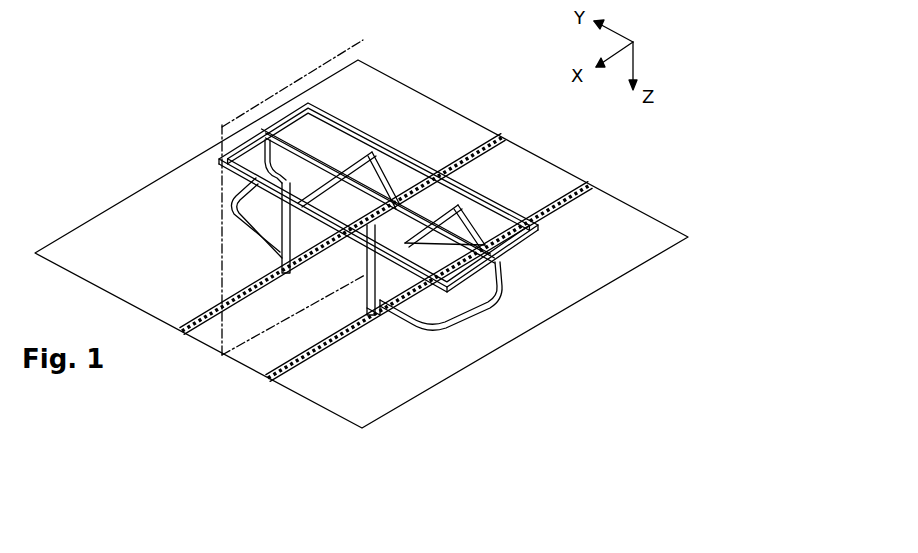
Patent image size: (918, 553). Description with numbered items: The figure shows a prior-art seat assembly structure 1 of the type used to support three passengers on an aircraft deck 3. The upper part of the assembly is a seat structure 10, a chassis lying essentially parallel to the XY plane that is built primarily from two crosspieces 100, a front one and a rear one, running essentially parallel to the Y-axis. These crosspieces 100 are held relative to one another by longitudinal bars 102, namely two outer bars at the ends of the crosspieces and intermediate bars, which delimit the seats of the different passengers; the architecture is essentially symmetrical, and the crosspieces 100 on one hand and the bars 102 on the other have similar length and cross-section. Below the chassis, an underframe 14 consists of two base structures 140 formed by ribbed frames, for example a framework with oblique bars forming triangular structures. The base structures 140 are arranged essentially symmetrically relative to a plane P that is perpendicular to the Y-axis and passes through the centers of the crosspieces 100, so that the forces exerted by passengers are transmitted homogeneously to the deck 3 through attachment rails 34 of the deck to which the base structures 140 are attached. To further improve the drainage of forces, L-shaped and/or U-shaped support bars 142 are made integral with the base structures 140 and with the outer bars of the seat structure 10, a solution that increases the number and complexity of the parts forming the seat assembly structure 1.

The seat assembly structure 1 is at (156, 137).
The deck 3 is at (118, 263).
The plane P is at (290, 86).
The seat structure 10 is at (512, 251).
The underframe 14 is at (383, 312).
The attachment rails 34 is at (206, 325).
The crosspieces 100 is at (218, 157).
The longitudinal bars 102 is at (226, 136).
The base structures 140 is at (278, 262).
The support bars 142 is at (472, 303).